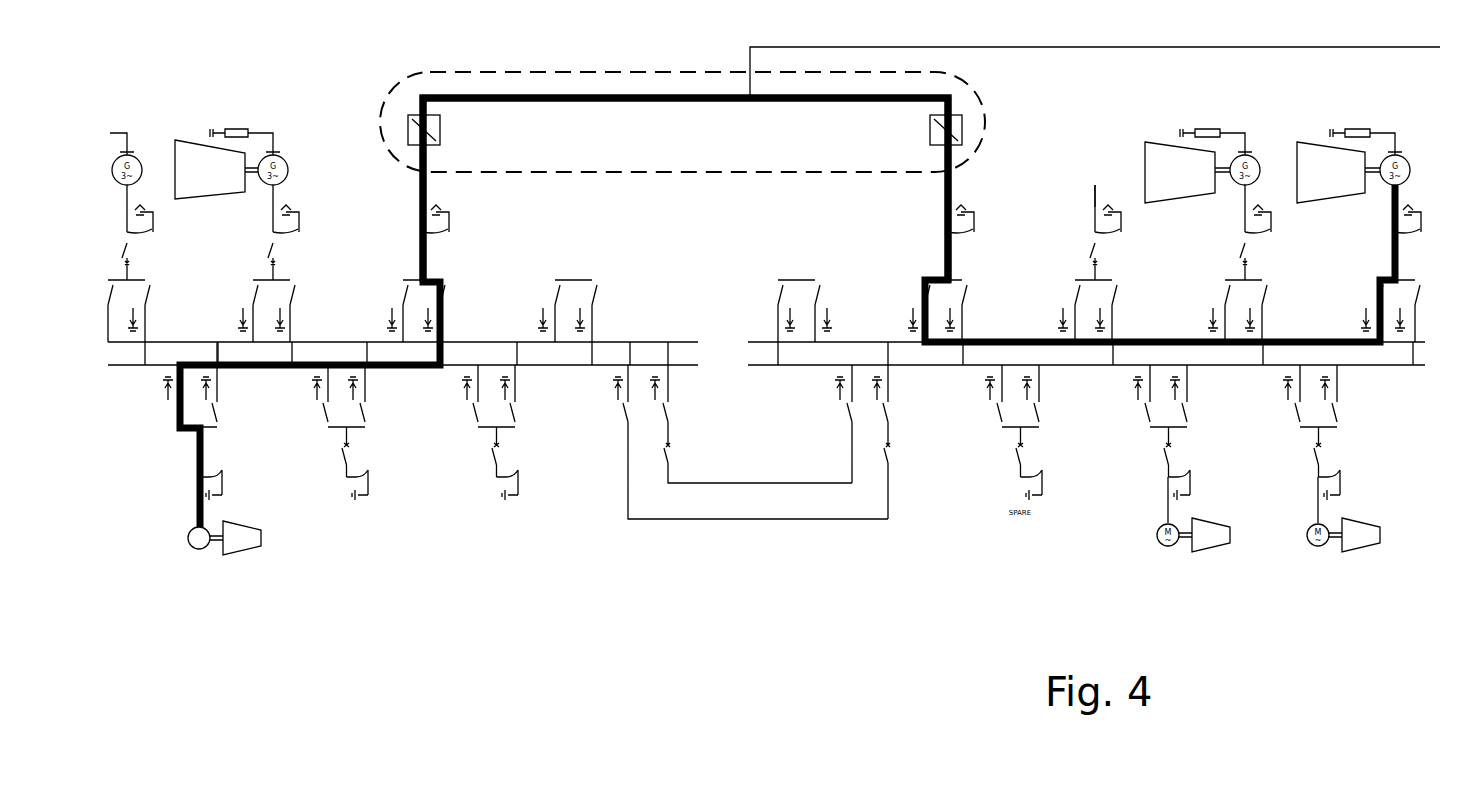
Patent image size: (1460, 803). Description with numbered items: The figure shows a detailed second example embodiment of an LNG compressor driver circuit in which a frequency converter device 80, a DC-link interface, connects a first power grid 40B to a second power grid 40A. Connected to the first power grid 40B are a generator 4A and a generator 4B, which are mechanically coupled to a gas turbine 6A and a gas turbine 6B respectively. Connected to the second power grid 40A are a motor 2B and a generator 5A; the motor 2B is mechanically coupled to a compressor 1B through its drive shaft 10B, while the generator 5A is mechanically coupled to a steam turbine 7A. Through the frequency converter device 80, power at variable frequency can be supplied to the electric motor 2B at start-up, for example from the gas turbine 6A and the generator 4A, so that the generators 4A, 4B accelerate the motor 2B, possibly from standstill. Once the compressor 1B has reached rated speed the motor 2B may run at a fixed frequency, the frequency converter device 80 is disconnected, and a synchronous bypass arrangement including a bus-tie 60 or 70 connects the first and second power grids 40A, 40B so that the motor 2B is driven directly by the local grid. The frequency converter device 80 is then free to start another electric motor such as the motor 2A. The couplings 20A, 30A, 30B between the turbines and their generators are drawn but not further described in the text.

The compressor 1B is at (243, 525).
The electric motor 2A is at (1222, 525).
The electric motor 2B is at (190, 545).
The generator 4A is at (1410, 157).
The generator 4B is at (1228, 153).
The generator 5A is at (287, 163).
The gas turbine 6A is at (1300, 158).
The gas turbine 6B is at (1145, 160).
The steam turbine 7A is at (200, 143).
The drive shaft 10B is at (213, 543).
The coupling 20A is at (250, 162).
The coupling 30A is at (1373, 180).
The coupling 30B is at (1227, 180).
The second power grid 40A is at (388, 342).
The first power grid 40B is at (1053, 342).
The bus-tie 60 is at (762, 283).
The bus-tie 70 is at (775, 477).
The frequency converter device 80 is at (565, 72).